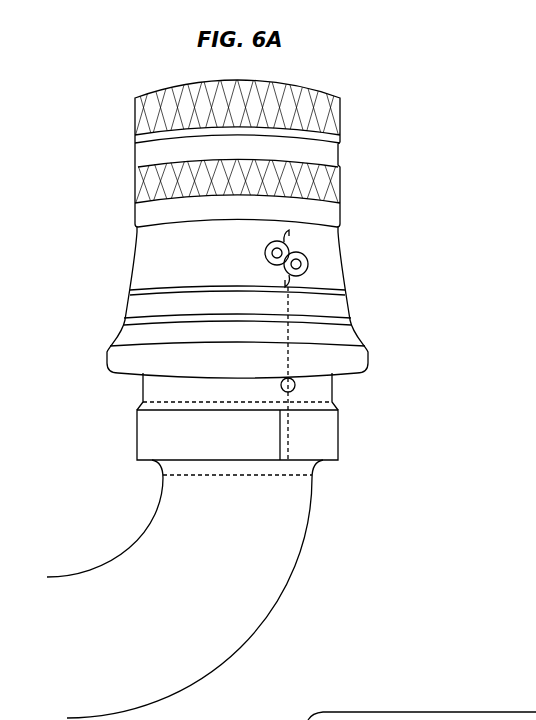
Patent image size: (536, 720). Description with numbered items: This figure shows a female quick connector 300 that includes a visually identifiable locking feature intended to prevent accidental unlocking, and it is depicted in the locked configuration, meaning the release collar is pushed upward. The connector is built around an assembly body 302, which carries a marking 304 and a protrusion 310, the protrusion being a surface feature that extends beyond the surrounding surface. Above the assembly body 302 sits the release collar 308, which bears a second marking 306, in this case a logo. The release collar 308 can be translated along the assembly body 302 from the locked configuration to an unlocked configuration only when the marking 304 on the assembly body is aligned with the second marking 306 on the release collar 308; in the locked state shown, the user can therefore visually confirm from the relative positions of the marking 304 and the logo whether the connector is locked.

The female quick connector 300 is at (91, 146).
The assembly body 302 is at (325, 447).
The marking 304 is at (288, 428).
The second marking 306 is at (312, 258).
The release collar 308 is at (338, 310).
The protrusion 310 is at (295, 385).